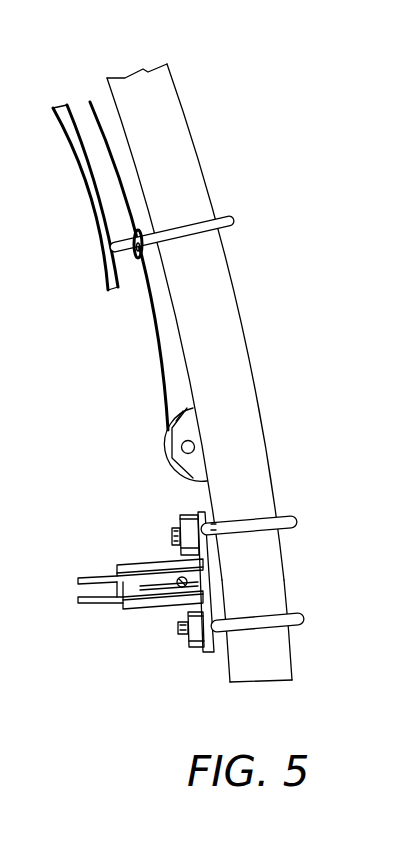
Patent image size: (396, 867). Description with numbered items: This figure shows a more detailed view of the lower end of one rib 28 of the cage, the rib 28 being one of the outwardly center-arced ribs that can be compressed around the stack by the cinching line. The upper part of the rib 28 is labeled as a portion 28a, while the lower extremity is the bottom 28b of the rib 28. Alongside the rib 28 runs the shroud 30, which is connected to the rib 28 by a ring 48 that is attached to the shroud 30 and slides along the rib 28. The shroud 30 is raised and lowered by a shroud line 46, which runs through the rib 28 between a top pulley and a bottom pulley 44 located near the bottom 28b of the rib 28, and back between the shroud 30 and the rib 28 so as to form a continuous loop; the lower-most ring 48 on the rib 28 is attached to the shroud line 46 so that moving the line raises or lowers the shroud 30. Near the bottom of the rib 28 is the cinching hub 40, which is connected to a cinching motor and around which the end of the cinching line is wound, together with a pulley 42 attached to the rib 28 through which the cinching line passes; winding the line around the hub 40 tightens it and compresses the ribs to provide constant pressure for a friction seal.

The rib 28 is at (251, 353).
The first portion of support strip 28a is at (248, 475).
The bottom of the rib 28b is at (270, 665).
The shroud 30 is at (88, 182).
The cinching hub 40 is at (149, 522).
The pulley 42 is at (140, 585).
The bottom pulley 44 is at (173, 434).
The shroud line 46 is at (160, 368).
The ring 48 is at (233, 226).